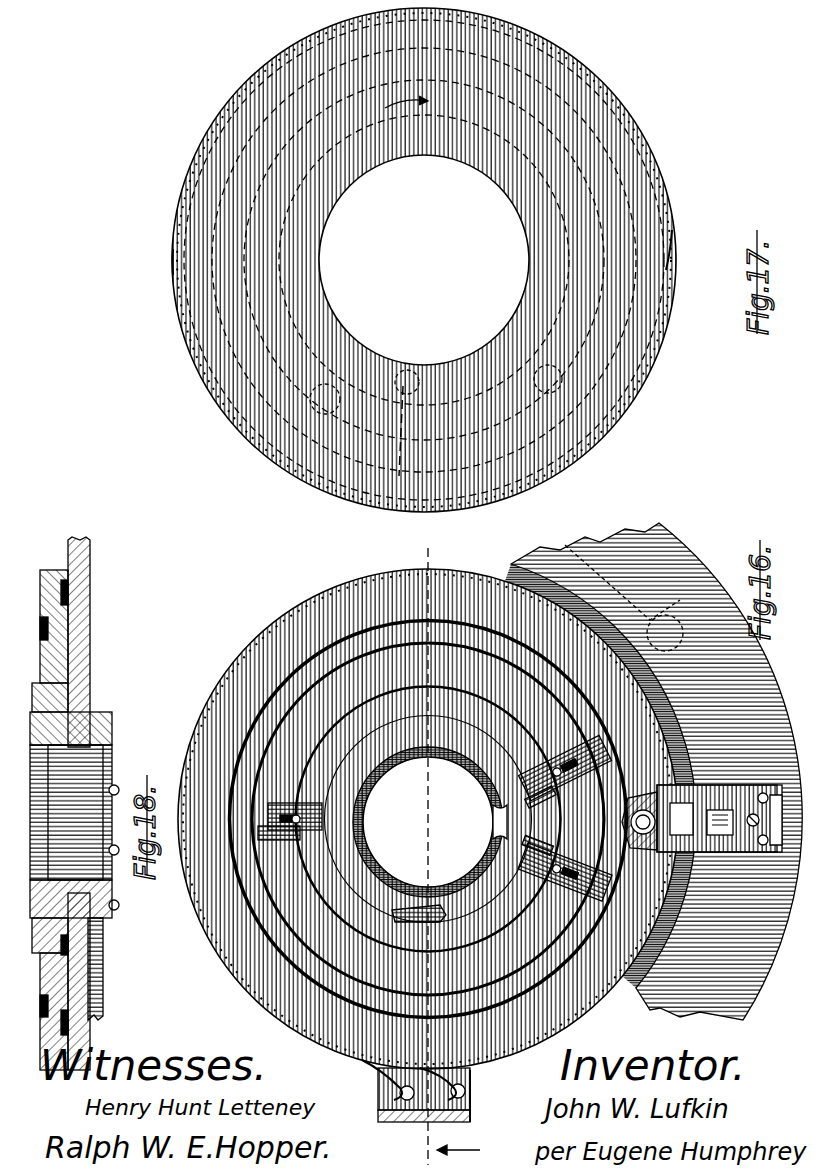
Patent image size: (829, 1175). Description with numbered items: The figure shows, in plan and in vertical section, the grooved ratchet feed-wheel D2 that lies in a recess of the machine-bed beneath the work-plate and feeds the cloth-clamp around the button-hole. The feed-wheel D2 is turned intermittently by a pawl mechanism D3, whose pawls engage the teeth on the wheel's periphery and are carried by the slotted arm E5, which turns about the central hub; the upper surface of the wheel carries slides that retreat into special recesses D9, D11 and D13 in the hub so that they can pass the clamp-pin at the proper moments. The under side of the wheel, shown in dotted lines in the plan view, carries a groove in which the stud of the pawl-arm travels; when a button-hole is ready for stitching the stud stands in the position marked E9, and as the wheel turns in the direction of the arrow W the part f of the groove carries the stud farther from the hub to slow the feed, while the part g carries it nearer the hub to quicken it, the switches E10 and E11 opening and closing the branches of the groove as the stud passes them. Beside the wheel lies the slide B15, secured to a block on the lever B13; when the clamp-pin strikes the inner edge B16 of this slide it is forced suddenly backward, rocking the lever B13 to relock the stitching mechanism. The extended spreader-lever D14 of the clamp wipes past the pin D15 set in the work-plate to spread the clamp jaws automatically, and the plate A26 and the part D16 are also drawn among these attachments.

In FIG. 17, the grooved ratchet feed-wheel D2 is at (424, 258).
In FIG. 16, the grooved ratchet feed-wheel D2 is at (428, 819).
In FIG. 18, the grooved ratchet feed-wheel D2 is at (50, 568).
In FIG. 17, the part of the groove f is at (654, 226).
In FIG. 17, the part of the groove g is at (198, 292).
In FIG. 17, the dotted lines indicating stud position E9 is at (407, 370).
In FIG. 17, the switch E10 is at (336, 406).
In FIG. 17, the switch E11 is at (556, 378).
In FIG. 16, the lever B13 is at (798, 748).
In FIG. 16, the slide B15 is at (719, 818).
In FIG. 16, the inner edge of slide B16 is at (643, 808).
In FIG. 16, the plate A26 is at (712, 830).
In FIG. 16, the direction of rotation W is at (440, 853).
In FIG. 16, the recess in hub D13 is at (555, 773).
In FIG. 16, the spreader-lever D14 is at (300, 842).
In FIG. 16, the pin in work-plate D15 is at (590, 822).
In FIG. 16, the wedge D16 is at (409, 895).
In FIG. 16, the pawl mechanism D3 is at (378, 1100).
In FIG. 16, the slotted arm E5 is at (472, 1092).
In FIG. 18, the slotted arm E5 is at (103, 990).
In FIG. 18, the recess in hub D11 is at (22, 708).
In FIG. 18, the recess in hub D9 is at (30, 900).